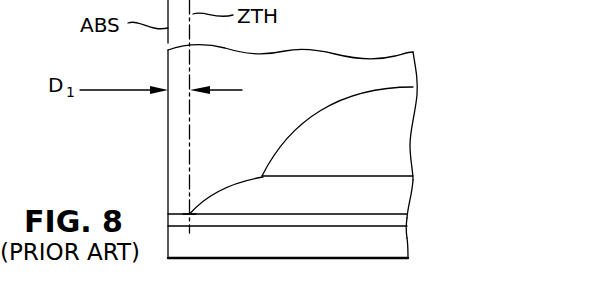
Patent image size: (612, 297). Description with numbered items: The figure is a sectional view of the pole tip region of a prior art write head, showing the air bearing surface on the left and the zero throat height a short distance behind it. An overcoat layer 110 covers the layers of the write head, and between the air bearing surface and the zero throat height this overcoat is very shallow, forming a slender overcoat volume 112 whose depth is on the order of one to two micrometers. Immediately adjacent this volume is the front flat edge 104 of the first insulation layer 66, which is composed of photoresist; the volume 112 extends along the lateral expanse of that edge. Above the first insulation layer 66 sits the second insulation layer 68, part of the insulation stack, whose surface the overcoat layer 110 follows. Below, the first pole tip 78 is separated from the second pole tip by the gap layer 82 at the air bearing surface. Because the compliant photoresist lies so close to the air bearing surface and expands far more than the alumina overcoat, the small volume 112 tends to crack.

The overcoat layer 110 is at (308, 63).
The slender overcoat volume 112 is at (172, 147).
The front flat edge 104 is at (189, 214).
The second insulation layer 68 is at (400, 142).
The first insulation layer 66 is at (398, 193).
The gap layer 82 is at (398, 220).
The first pole tip 78 is at (400, 244).